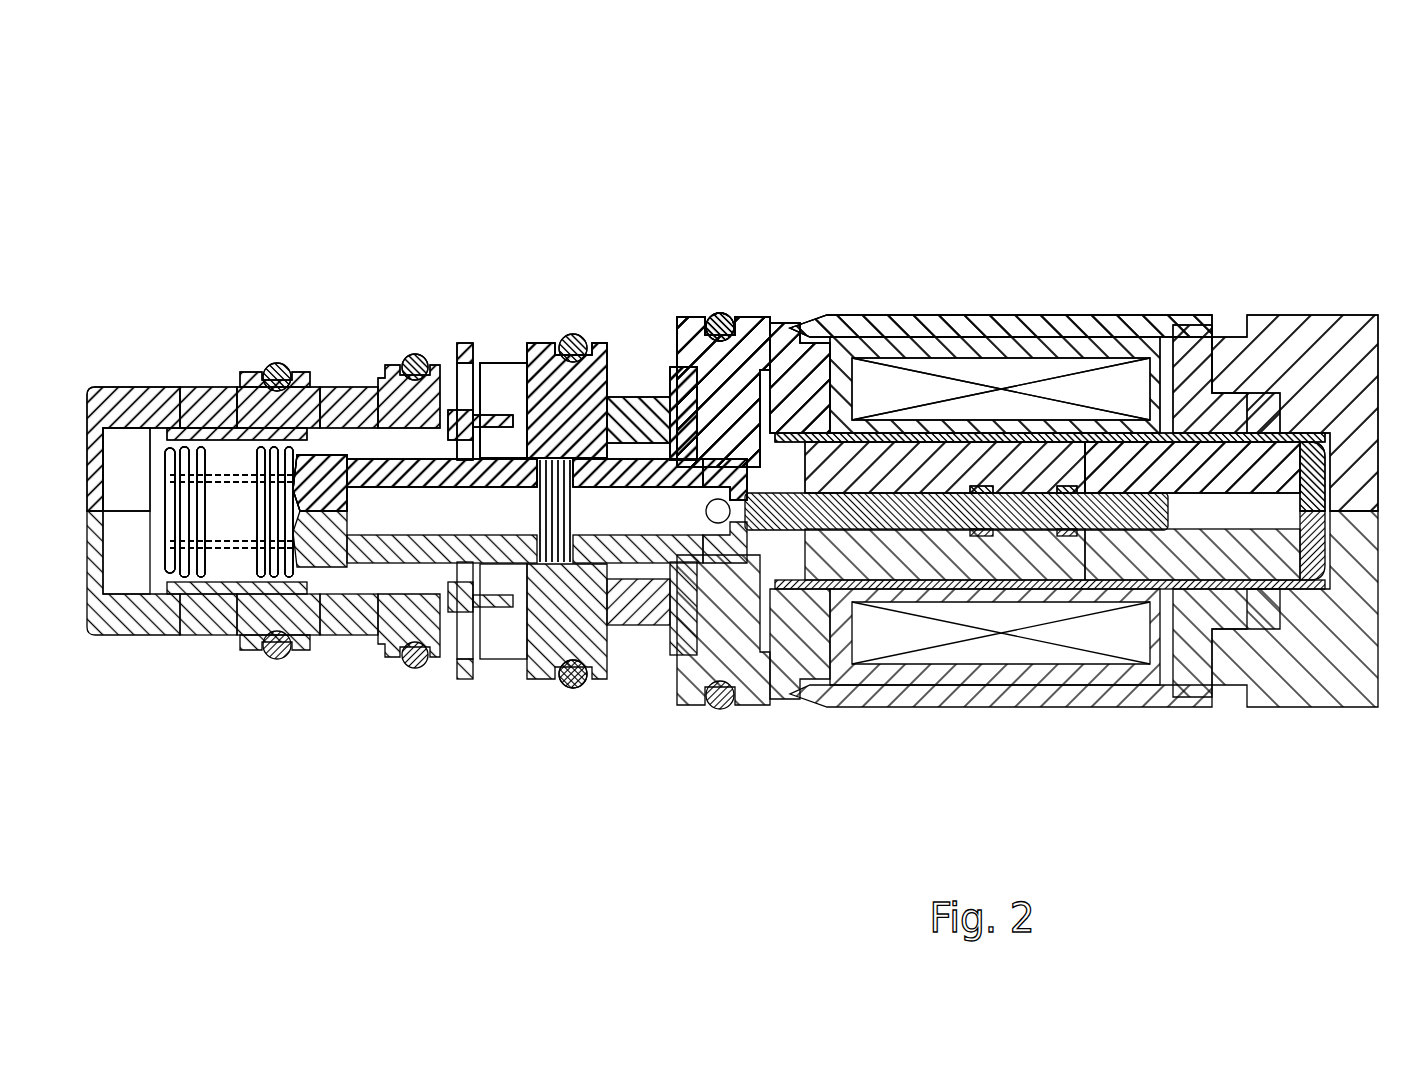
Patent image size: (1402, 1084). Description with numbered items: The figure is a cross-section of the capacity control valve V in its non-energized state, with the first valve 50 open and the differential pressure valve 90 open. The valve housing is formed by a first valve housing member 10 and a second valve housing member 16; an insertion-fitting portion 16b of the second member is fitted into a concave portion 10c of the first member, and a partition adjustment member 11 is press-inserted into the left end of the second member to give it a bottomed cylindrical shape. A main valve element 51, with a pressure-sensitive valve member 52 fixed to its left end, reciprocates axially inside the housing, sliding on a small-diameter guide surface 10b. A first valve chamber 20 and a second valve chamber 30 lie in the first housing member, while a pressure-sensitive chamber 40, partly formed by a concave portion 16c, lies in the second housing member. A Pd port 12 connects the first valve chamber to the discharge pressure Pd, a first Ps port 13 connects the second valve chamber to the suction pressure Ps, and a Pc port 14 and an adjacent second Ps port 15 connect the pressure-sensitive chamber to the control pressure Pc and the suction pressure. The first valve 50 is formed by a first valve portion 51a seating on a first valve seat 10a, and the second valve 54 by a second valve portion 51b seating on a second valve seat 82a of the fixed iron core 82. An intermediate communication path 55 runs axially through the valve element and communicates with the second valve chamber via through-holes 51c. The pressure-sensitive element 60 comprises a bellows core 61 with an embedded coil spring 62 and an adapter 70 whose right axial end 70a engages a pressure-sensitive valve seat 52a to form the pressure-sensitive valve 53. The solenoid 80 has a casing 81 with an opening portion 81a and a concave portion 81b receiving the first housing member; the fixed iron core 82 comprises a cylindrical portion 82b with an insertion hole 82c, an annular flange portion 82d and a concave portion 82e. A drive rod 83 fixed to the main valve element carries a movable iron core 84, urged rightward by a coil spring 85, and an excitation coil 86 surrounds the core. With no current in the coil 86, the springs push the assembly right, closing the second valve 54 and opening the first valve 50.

The capacity control valve V is at (1322, 130).
The first valve housing member 10 is at (388, 360).
The first valve seat 10a is at (460, 345).
The guide surface 10b is at (583, 400).
The concave portion 10c is at (498, 622).
The partition adjustment member 11 is at (122, 505).
The Pd port 12 is at (557, 345).
The first Ps port 13 is at (620, 410).
The Pc port 14 is at (300, 393).
The second Ps port 15 is at (175, 395).
The second valve housing member 16 is at (125, 383).
The insertion-fitting portion 16b is at (460, 627).
The concave portion 16c is at (425, 410).
The first valve chamber 20 is at (553, 413).
The second valve chamber 30 is at (680, 440).
The pressure-sensitive chamber 40 is at (368, 400).
The first valve 50 is at (425, 152).
The main valve element 51 is at (577, 692).
The first valve portion 51a is at (480, 400).
The second valve portion 51b is at (728, 340).
The through-holes 51c is at (668, 597).
The pressure-sensitive valve member 52 is at (420, 642).
The pressure-sensitive valve seat 52a is at (348, 562).
The pressure-sensitive valve 53 is at (408, 762).
The second valve 54 is at (662, 152).
The intermediate communication path 55 is at (555, 572).
The pressure-sensitive element 60 is at (188, 592).
The bellows core 61 is at (213, 550).
The coil spring 62 is at (238, 572).
The adapter 70 is at (300, 566).
The right axial end 70a is at (397, 569).
The solenoid 80 is at (1198, 234).
The casing 81 is at (742, 718).
The opening portion 81a is at (790, 577).
The concave portion 81b is at (745, 592).
The fixed iron core 82 is at (1062, 336).
The second valve seat 82a is at (693, 318).
The cylindrical portion 82b is at (1047, 425).
The insertion hole 82c is at (960, 487).
The annular flange portion 82d is at (778, 380).
The concave portion 82e is at (903, 432).
The drive rod 83 is at (1100, 445).
The movable iron core 84 is at (1200, 562).
The coil spring 85 is at (978, 537).
The coil 86 is at (1043, 632).
The differential pressure valve 90 is at (237, 430).
The suction pressure Ps is at (208, 425).
The control pressure Pc is at (347, 430).
The discharge pressure Pd is at (505, 440).